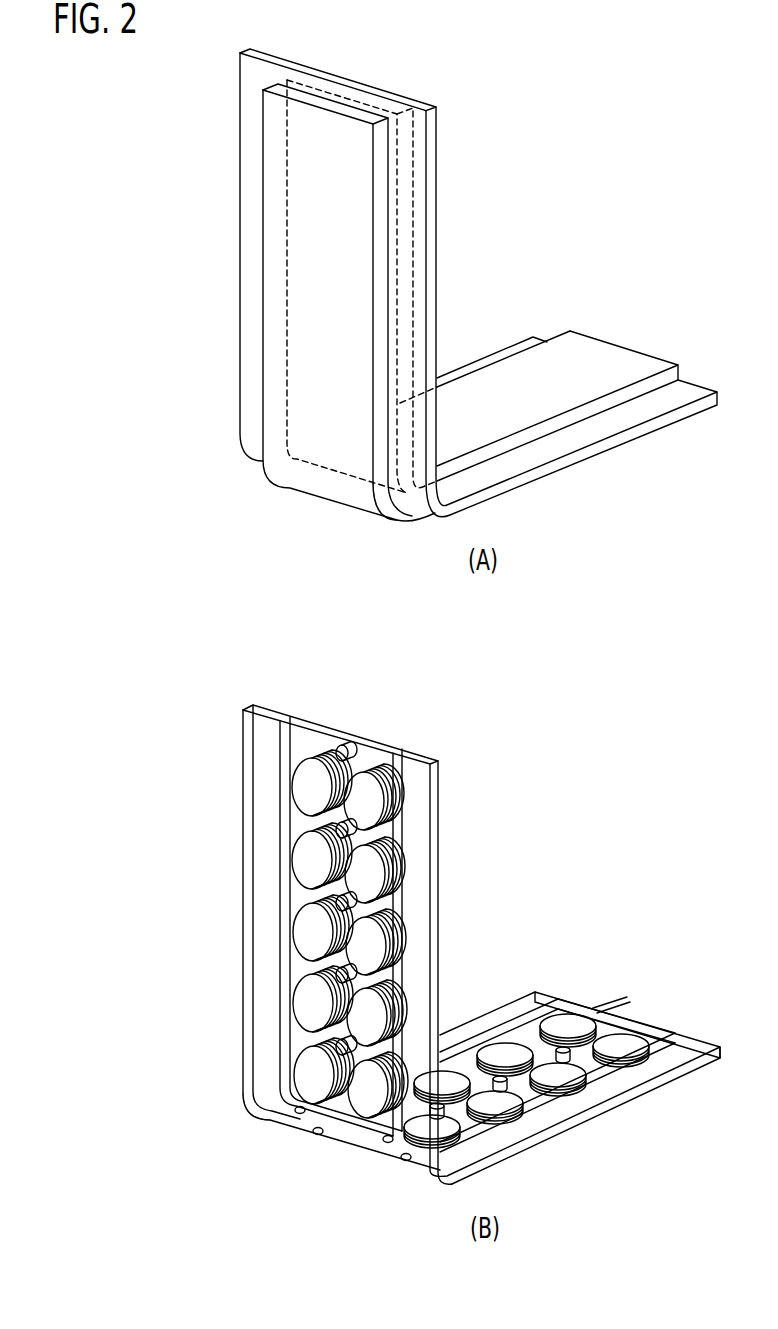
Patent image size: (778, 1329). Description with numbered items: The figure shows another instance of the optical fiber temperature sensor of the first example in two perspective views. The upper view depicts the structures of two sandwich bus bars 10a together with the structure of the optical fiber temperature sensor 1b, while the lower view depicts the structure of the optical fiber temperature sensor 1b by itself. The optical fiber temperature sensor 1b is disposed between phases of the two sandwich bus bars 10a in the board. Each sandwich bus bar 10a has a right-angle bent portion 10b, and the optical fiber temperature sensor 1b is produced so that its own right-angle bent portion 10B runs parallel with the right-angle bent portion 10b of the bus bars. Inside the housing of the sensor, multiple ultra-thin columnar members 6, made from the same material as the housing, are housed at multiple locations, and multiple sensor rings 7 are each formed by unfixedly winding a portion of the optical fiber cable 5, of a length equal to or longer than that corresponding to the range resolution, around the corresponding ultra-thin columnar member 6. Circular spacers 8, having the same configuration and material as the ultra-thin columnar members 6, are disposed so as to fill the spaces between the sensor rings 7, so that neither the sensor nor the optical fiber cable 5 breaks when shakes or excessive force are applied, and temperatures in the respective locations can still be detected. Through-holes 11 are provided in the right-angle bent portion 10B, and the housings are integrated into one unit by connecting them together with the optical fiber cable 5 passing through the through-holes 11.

The optical fiber temperature sensor 1b is at (240, 78).
The sandwich bus bar 10a is at (349, 96).
The right-angle bent portion 10b is at (377, 503).
The optical fiber cable 5 is at (390, 903).
The ultra-thin columnar member 6 is at (368, 955).
The sensor ring 7 is at (371, 766).
The circular spacer 8 is at (328, 747).
The right-angle bent portion 10B is at (280, 1122).
The through-hole 11 is at (300, 1115).